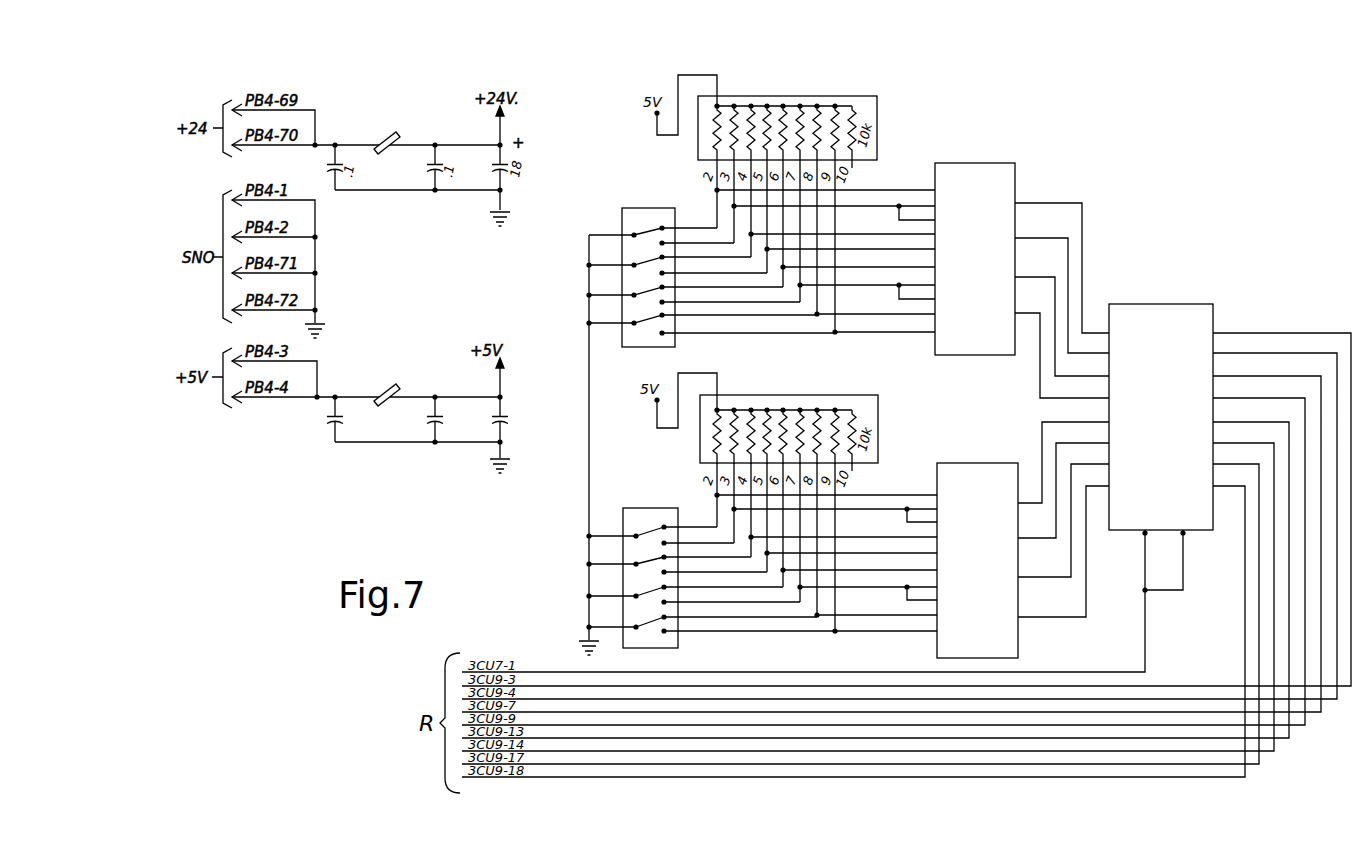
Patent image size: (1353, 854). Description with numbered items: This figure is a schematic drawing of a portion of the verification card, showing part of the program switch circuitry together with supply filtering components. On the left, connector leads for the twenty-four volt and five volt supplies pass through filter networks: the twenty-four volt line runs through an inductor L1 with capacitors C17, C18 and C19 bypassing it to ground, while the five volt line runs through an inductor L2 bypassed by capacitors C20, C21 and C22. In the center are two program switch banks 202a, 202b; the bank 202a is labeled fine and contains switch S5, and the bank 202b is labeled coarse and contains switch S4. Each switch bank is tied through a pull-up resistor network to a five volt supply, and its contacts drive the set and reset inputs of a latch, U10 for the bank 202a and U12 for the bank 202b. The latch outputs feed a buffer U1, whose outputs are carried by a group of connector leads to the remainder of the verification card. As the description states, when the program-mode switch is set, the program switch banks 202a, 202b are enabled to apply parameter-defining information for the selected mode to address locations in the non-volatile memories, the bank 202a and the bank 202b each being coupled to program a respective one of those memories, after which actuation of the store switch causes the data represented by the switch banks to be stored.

The program switch bank 202a is at (712, 278).
The program switch bank 202b is at (712, 579).
The fine switch S5 is at (720, 354).
The coarse switch S4 is at (693, 658).
The 74LS279 latch U10 is at (975, 259).
The 74LS279 latch U12 is at (977, 560).
The 74LS244 buffer U1 is at (1161, 417).
The inductor L1 is at (383, 138).
The inductor L2 is at (383, 390).
The capacitor C17 is at (329, 167).
The capacitor C18 is at (429, 167).
The capacitor C19 is at (494, 167).
The capacitor C20 is at (329, 419).
The capacitor C21 is at (429, 419).
The capacitor C22 is at (494, 419).